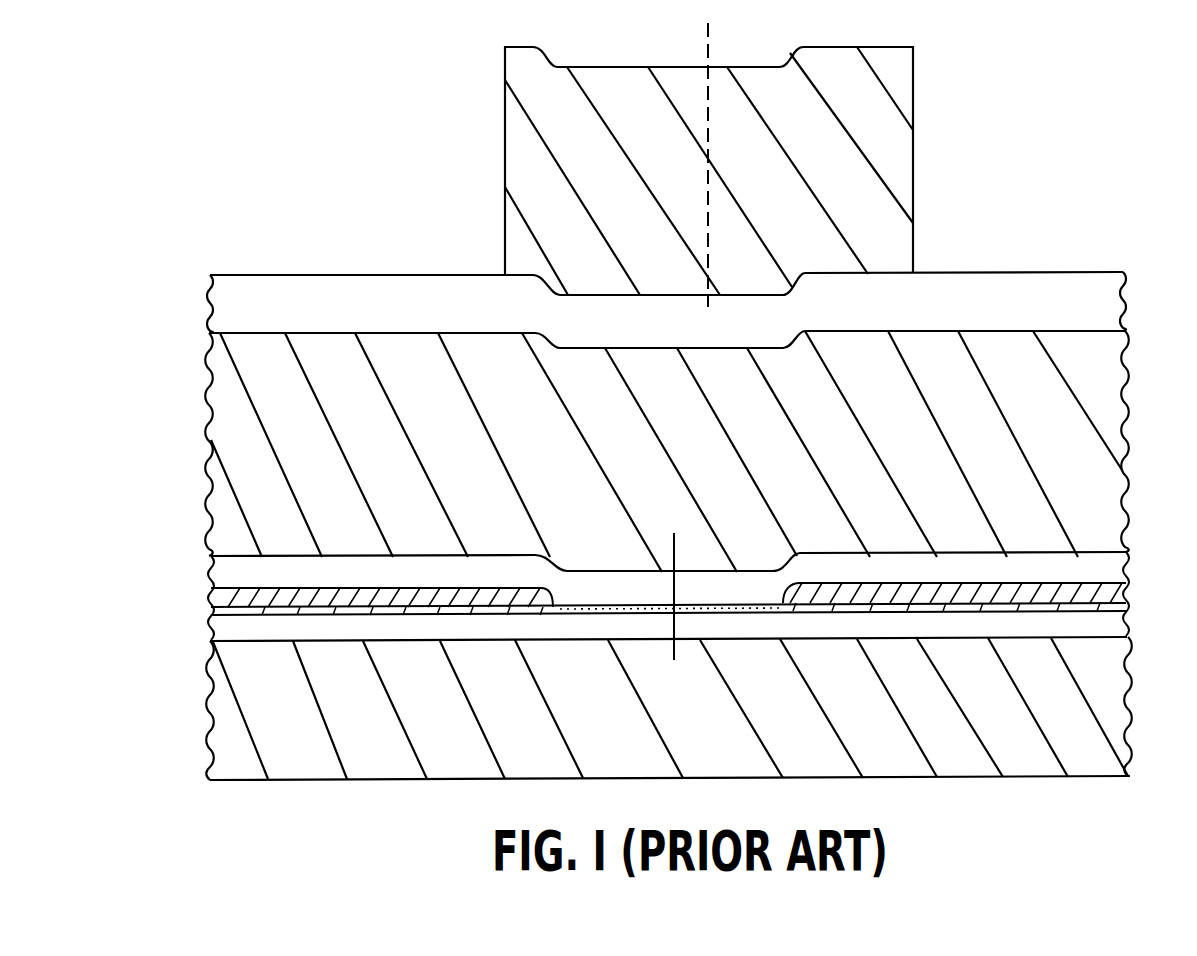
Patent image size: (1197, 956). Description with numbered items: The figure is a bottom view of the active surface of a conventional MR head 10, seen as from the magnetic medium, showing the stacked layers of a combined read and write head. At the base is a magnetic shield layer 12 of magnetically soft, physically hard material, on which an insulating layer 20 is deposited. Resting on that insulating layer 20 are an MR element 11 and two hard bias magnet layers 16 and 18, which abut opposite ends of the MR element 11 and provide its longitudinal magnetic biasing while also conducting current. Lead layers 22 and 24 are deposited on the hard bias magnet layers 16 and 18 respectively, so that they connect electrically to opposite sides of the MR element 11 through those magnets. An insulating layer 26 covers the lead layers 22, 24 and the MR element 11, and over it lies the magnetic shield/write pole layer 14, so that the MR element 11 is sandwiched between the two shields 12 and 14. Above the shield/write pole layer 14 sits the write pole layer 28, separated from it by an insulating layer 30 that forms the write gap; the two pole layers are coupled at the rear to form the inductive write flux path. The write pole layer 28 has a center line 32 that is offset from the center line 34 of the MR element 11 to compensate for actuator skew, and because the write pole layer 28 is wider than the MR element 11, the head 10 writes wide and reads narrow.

The MR head 10 is at (1048, 193).
The MR element 11 is at (750, 615).
The magnetic shield layer 12 is at (1032, 762).
The magnetic shield/write pole layer 14 is at (1083, 482).
The hard bias magnet layer 16 is at (1092, 608).
The hard bias magnet layer 18 is at (237, 615).
The insulating layer 20 is at (1120, 630).
The lead layer 22 is at (1112, 592).
The lead layer 24 is at (218, 598).
The insulating layer 26 is at (1112, 563).
The write pole layer 28 is at (900, 138).
The insulating layer 30 is at (1110, 300).
The center line 32 is at (712, 42).
The center line 34 is at (677, 586).